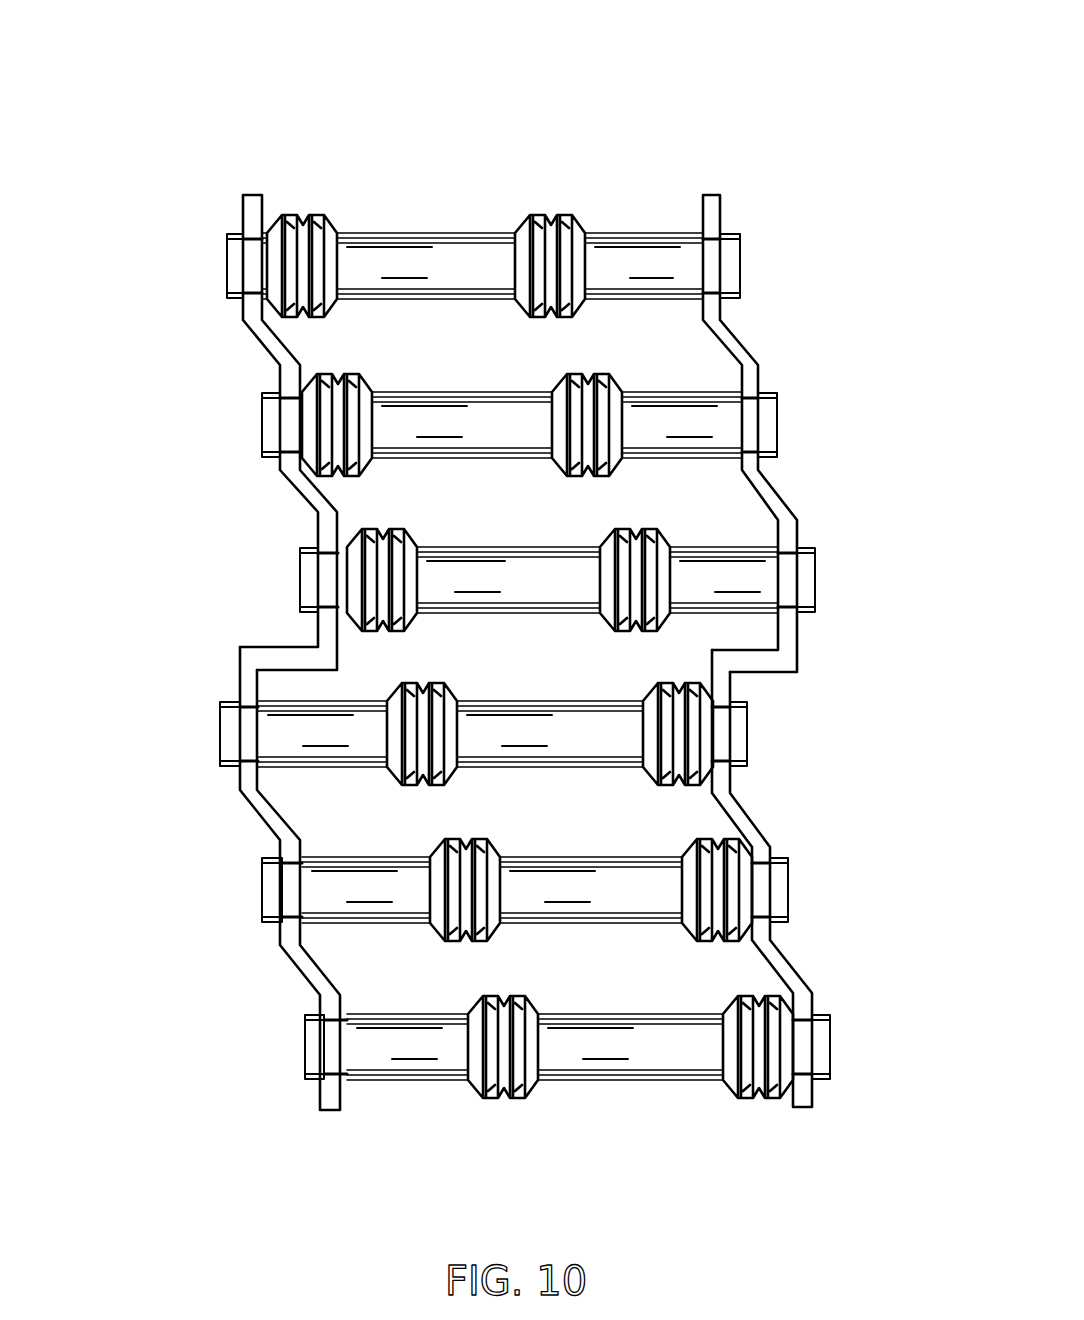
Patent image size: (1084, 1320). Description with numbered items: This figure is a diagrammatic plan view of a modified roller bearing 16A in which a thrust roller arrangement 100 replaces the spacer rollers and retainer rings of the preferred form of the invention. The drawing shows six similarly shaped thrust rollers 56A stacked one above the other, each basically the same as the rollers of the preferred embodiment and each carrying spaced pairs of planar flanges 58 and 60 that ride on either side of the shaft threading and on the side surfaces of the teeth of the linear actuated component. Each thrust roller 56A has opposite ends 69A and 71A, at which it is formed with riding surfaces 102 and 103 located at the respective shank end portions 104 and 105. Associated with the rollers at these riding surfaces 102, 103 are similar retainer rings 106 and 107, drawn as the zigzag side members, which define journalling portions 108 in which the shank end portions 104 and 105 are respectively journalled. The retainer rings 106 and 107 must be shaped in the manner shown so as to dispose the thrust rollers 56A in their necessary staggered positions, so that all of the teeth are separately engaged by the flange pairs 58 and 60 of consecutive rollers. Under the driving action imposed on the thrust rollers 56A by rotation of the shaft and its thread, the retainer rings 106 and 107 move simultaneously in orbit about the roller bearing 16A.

The modified roller bearing 16A is at (645, 100).
The thrust roller 56A is at (478, 560).
The pair of flanges 58 is at (300, 213).
The pair of flanges 60 is at (567, 212).
The thrust roller end 69A is at (232, 268).
The thrust roller end 71A is at (740, 730).
The thrust roller arrangement 100 is at (697, 185).
The riding surface 102 is at (204, 740).
The riding surface 103 is at (844, 423).
The shank end portion 104 is at (262, 452).
The shank end portion 105 is at (763, 437).
The retainer ring 106 is at (273, 815).
The retainer ring 107 is at (748, 820).
The journalling portion 108 is at (290, 418).